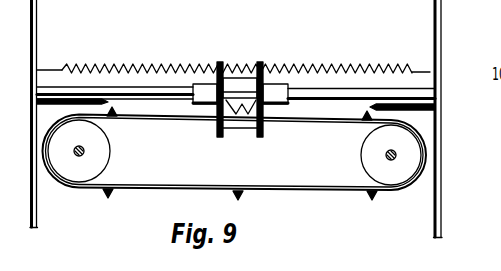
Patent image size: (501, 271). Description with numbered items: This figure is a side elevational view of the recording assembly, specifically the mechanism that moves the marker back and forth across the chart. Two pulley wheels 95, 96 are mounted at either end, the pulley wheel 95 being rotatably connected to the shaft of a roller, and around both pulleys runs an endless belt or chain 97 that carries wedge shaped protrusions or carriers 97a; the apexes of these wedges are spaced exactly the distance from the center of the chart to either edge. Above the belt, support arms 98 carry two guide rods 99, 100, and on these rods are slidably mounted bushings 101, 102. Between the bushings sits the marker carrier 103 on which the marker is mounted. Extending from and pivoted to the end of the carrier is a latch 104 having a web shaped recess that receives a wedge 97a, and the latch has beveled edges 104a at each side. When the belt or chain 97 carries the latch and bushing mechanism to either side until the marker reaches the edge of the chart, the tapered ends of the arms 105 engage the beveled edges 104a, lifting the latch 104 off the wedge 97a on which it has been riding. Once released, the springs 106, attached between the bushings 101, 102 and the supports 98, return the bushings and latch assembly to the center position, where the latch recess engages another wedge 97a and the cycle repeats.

The pulley wheel 95 is at (98, 166).
The pulley wheel 96 is at (404, 180).
The endless belt or chain 97 is at (157, 192).
The wedge shaped protrusions or carriers 97a is at (372, 193).
The support arms 98 is at (37, 215).
The guide rod 99 is at (363, 96).
The guide rod 100 is at (50, 92).
The bushing 101 is at (272, 86).
The bushing 102 is at (208, 86).
The marker carrier 103 is at (243, 80).
The latch 104 is at (218, 108).
The beveled edges 104a is at (263, 108).
The arms 105 is at (422, 110).
The springs 106 is at (102, 63).